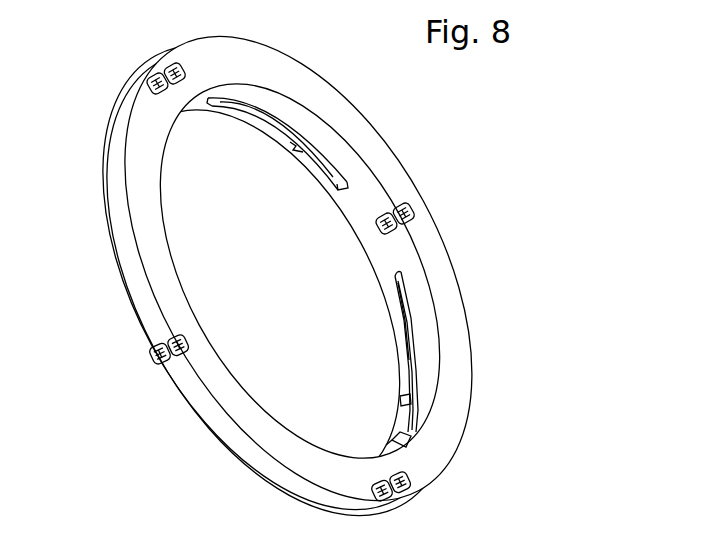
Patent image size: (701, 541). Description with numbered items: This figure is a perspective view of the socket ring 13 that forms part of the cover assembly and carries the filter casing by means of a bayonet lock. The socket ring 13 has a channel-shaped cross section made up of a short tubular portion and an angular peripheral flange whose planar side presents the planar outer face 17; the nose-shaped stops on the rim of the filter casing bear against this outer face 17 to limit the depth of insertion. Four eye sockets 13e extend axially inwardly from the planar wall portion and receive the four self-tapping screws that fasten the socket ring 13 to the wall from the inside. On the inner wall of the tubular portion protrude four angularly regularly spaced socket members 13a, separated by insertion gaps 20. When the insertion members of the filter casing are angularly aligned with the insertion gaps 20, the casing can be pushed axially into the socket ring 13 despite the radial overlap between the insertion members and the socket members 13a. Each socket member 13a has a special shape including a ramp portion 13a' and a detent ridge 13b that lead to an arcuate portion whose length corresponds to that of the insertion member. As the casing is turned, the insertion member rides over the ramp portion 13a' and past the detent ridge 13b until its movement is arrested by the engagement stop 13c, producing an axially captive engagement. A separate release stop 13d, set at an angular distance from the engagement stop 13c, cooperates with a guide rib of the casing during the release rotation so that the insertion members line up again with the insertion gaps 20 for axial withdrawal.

The socket ring 13 is at (458, 254).
The socket member 13a is at (478, 352).
The ramp portion 13a' is at (483, 348).
The detent ridge 13b is at (406, 334).
The engagement stop 13c is at (411, 400).
The release stop 13d is at (403, 444).
The eye socket 13e is at (157, 362).
The planar outer face 17 is at (163, 243).
The insertion gap 20 is at (363, 203).